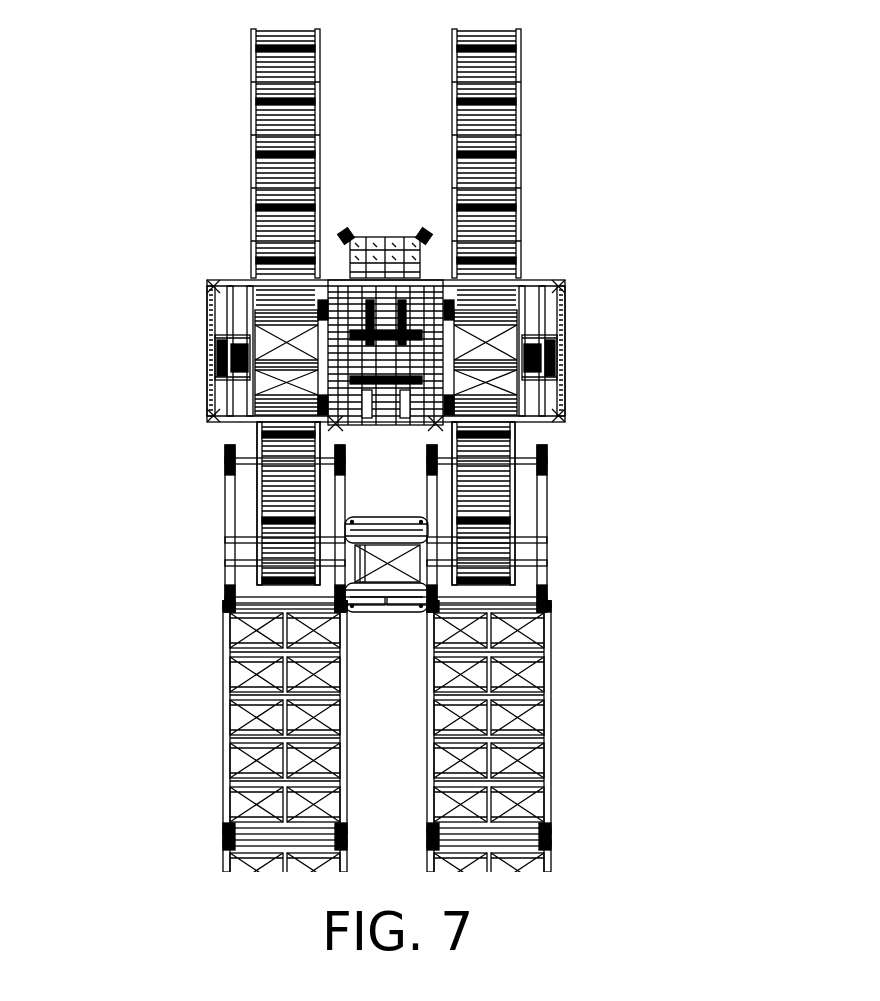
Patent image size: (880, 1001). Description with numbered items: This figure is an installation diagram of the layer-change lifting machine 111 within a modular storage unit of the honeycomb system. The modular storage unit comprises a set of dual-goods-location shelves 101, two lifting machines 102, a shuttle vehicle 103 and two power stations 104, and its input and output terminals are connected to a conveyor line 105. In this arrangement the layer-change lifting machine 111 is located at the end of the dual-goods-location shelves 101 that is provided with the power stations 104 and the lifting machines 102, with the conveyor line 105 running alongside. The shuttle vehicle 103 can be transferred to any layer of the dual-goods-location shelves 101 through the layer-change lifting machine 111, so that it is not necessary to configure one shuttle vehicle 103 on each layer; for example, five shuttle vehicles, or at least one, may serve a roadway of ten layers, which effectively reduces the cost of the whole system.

The dual-goods-location shelves 101 is at (548, 693).
The lifting machines 102 is at (545, 338).
The shuttle vehicle 103 is at (345, 548).
The power stations 104 is at (510, 512).
The conveyor line 105 is at (505, 168).
The layer-change lifting machine 111 is at (265, 305).